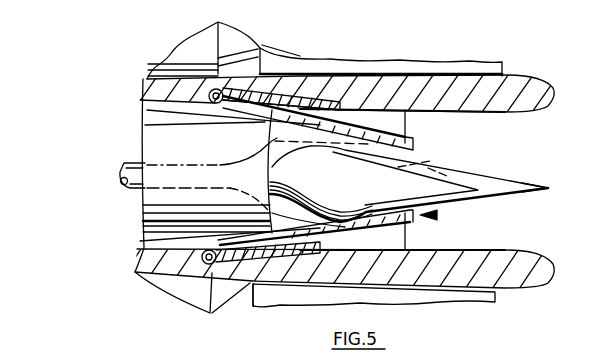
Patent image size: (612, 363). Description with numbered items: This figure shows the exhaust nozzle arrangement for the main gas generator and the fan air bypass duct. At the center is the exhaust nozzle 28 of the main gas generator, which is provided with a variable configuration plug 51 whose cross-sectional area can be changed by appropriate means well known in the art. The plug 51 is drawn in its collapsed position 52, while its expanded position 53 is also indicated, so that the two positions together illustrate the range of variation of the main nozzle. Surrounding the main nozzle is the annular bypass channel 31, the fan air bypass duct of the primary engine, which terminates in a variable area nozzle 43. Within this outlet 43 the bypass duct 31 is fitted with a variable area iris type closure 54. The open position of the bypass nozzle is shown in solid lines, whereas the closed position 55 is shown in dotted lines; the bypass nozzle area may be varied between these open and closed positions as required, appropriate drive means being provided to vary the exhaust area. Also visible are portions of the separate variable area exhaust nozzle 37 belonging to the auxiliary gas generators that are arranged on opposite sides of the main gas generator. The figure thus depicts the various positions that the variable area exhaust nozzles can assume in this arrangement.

The exhaust nozzle 28 is at (433, 215).
The bypass channel 31 is at (152, 111).
The variable area exhaust nozzle 37 is at (503, 63).
The variable area nozzle 43 is at (405, 126).
The variable configuration plug 51 is at (447, 182).
The collapsed position 52 is at (430, 161).
The expanded position 53 is at (522, 185).
The variable area iris type closure 54 is at (299, 108).
The closed position 55 is at (258, 118).